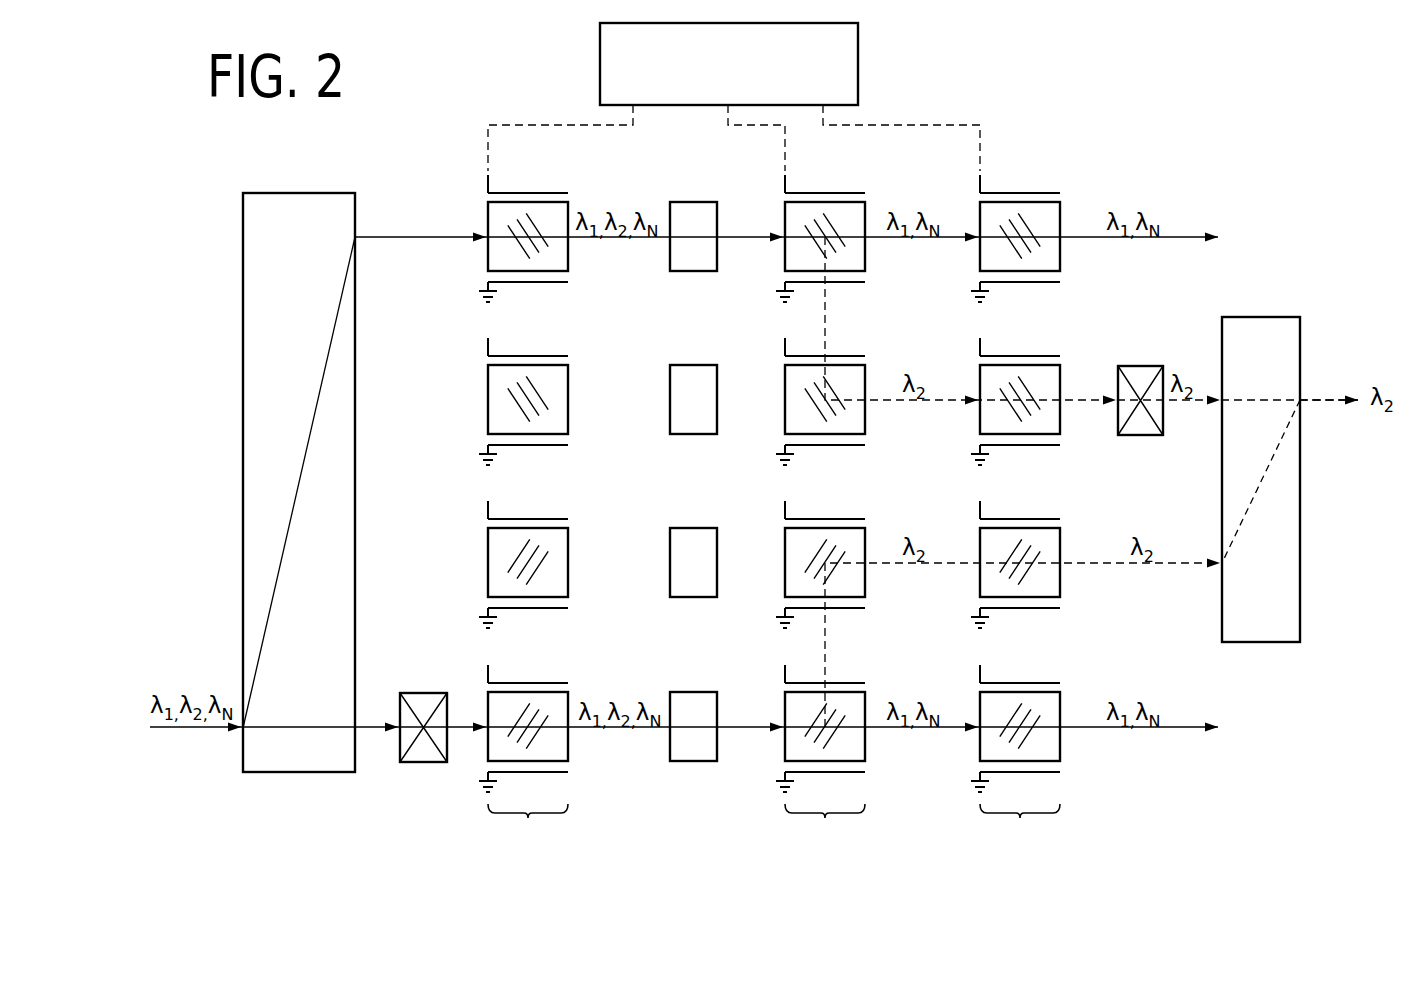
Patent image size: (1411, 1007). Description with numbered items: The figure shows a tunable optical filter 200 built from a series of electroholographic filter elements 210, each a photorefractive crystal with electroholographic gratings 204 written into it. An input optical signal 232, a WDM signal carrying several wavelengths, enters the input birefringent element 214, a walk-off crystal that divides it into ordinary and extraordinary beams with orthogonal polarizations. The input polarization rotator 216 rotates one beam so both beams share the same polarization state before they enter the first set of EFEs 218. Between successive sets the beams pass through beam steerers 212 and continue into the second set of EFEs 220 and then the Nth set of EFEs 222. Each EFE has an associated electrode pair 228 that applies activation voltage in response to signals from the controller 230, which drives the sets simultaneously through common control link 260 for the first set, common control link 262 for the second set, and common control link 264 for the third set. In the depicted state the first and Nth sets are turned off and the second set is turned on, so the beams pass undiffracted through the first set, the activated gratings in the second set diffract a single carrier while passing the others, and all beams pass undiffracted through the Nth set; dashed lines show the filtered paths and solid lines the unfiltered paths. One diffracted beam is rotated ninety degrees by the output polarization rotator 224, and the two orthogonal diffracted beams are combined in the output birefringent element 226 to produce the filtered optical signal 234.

The tunable optical filter 200 is at (1158, 64).
The electroholographic gratings 204 is at (530, 255).
The electroholographic filter elements 210 is at (488, 222).
The beam steerers 212 is at (697, 271).
The input birefringent element 214 is at (293, 773).
The input polarization rotator 216 is at (422, 763).
The first set of EFEs 218 is at (519, 509).
The second set of EFEs 220 is at (820, 514).
The Nth set of EFEs 222 is at (1015, 514).
The output polarization rotator 224 is at (1141, 436).
The output birefringent element 226 is at (1240, 643).
The electrode pairs 228 is at (527, 193).
The controller 230 is at (858, 68).
The input optical signal 232 is at (215, 733).
The filtered optical signal 234 is at (1335, 398).
The common control link 260 is at (570, 125).
The common control link 262 is at (762, 127).
The common control link 264 is at (940, 125).